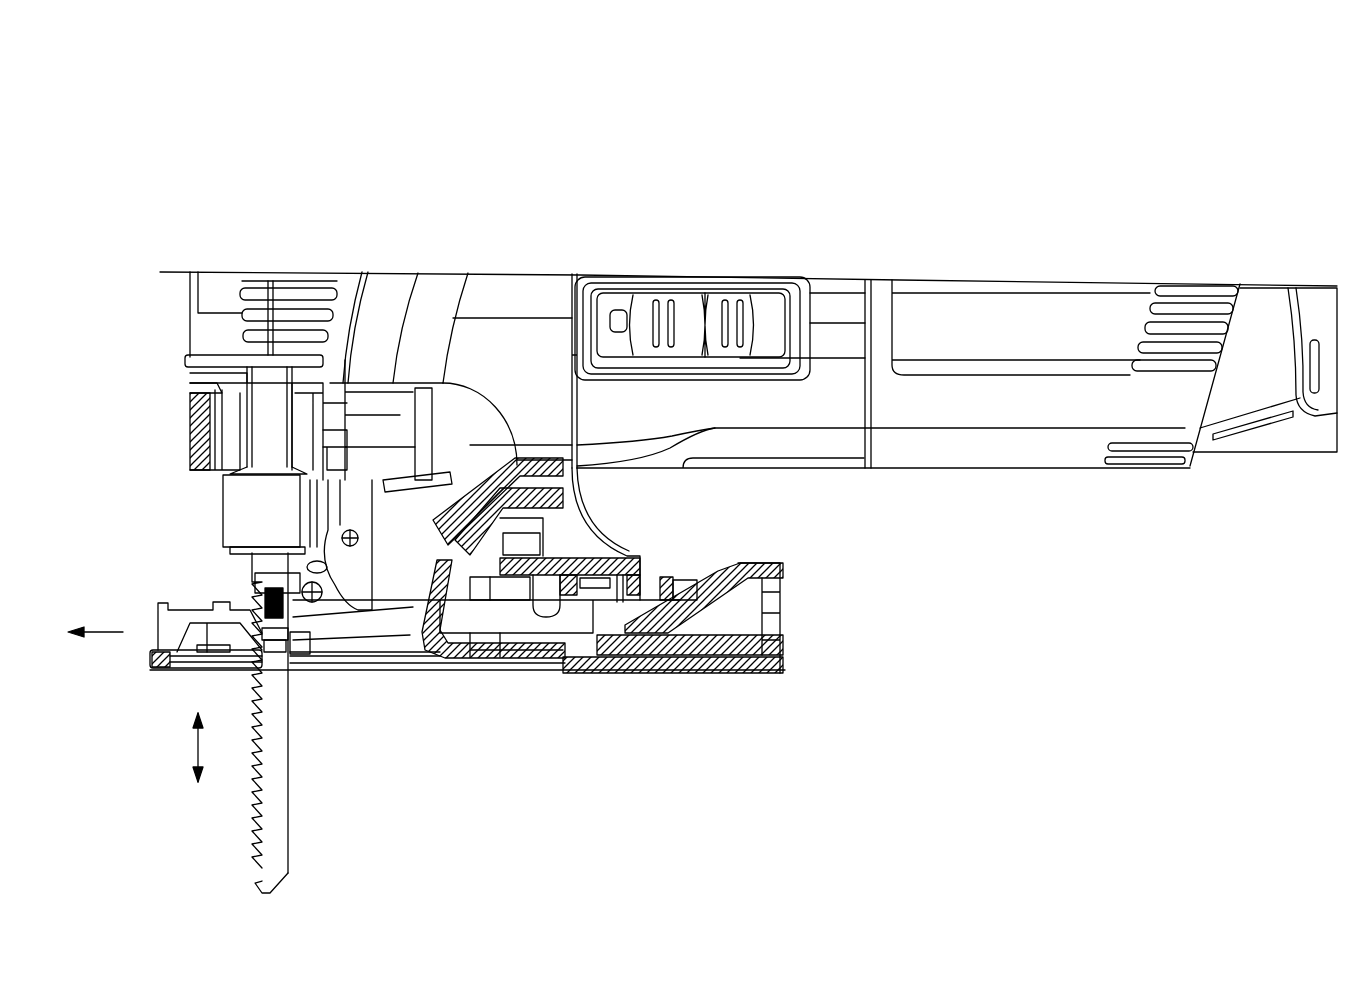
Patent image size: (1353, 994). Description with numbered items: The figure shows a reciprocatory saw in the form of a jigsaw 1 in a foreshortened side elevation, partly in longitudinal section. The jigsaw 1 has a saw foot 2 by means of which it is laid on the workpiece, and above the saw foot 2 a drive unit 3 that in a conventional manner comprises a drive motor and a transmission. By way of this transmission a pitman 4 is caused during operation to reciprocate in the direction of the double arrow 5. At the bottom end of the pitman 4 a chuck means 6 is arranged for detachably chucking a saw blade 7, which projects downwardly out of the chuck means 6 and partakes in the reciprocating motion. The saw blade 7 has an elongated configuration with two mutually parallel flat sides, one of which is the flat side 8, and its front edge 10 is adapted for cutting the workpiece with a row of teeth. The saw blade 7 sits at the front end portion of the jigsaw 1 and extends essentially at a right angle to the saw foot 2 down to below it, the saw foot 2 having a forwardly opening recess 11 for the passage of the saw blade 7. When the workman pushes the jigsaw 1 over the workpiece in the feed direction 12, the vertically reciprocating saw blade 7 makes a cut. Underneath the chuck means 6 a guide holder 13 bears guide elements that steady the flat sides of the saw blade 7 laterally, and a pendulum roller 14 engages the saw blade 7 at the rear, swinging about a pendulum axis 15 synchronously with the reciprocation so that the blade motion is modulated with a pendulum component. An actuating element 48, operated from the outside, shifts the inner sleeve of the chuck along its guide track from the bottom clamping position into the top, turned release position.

The jigsaw 1 is at (894, 166).
The saw foot 2 is at (671, 678).
The drive unit 3 is at (1010, 455).
The pitman 4 is at (247, 410).
The double arrow 5 is at (192, 752).
The chuck means 6 is at (222, 492).
The saw blade 7 is at (290, 790).
The flat side 8 is at (277, 840).
The front edge 10 is at (250, 800).
The recess 11 is at (260, 668).
The feed direction 12 is at (110, 632).
The guide holder 13 is at (288, 655).
The pendulum roller 14 is at (330, 565).
The pendulum axis 15 is at (352, 530).
The actuating element 48 is at (243, 520).